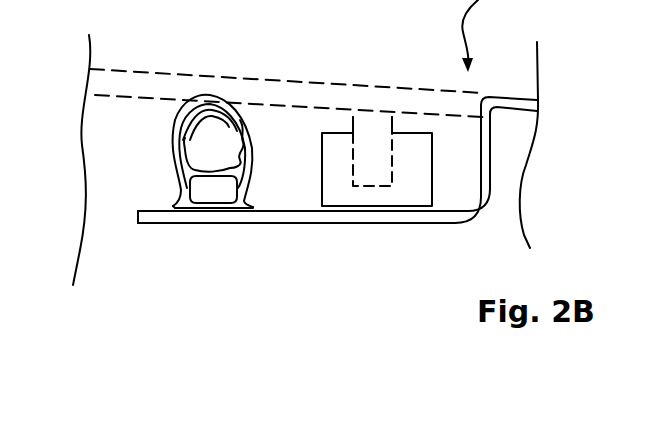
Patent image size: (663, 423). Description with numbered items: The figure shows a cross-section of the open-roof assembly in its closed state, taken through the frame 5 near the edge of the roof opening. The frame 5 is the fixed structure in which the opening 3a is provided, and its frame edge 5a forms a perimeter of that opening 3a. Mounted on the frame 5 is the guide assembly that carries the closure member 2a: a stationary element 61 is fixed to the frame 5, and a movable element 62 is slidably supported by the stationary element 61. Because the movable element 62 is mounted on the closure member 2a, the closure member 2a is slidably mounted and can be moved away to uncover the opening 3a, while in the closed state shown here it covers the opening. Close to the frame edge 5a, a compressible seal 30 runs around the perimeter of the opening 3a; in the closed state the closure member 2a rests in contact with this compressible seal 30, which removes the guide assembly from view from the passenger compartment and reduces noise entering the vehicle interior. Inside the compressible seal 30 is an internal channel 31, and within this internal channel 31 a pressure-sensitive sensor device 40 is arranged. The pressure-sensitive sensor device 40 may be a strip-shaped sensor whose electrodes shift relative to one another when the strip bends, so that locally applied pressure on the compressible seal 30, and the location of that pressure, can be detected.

The closure member 2a is at (390, 100).
The opening 3a is at (103, 240).
The frame 5 is at (283, 215).
The frame edge 5a is at (146, 237).
The compressible seal 30 is at (240, 135).
The internal channel 31 is at (205, 152).
The pressure-sensitive sensor device 40 is at (232, 130).
The stationary element 61 is at (423, 195).
The movable element 62 is at (362, 177).